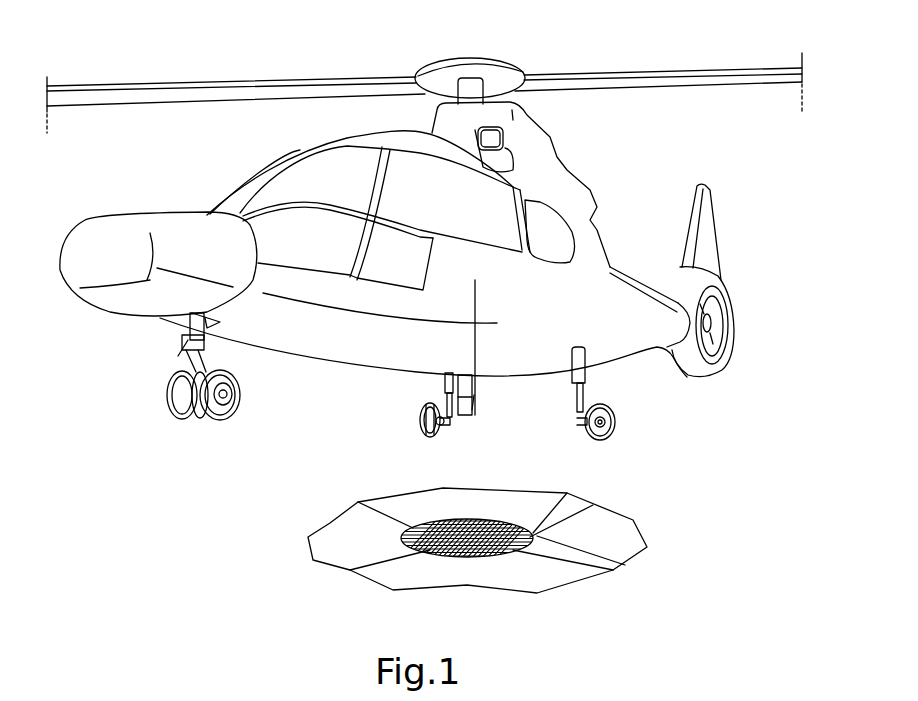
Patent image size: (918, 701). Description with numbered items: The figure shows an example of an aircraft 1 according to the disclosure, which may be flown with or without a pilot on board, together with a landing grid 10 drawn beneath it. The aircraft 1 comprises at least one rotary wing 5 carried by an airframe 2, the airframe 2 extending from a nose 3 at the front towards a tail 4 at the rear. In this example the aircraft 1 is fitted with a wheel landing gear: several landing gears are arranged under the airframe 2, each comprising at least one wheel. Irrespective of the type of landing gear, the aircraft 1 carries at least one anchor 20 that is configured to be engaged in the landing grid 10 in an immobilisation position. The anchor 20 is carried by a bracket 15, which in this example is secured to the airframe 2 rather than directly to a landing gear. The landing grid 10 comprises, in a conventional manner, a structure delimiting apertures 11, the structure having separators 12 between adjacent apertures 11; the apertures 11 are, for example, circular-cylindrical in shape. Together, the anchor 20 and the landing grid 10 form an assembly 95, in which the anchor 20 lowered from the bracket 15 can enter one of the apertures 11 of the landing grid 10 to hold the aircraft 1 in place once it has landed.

The aircraft 1 is at (104, 352).
The airframe 2 is at (333, 343).
The nose 3 is at (62, 235).
The tail 4 is at (722, 269).
The rotary wing 5 is at (537, 60).
The bracket 15 is at (473, 386).
The anchor 20 is at (486, 409).
The assembly 95 is at (313, 578).
The landing grid 10 is at (626, 542).
The apertures 11 is at (590, 503).
The separators 12 is at (625, 565).